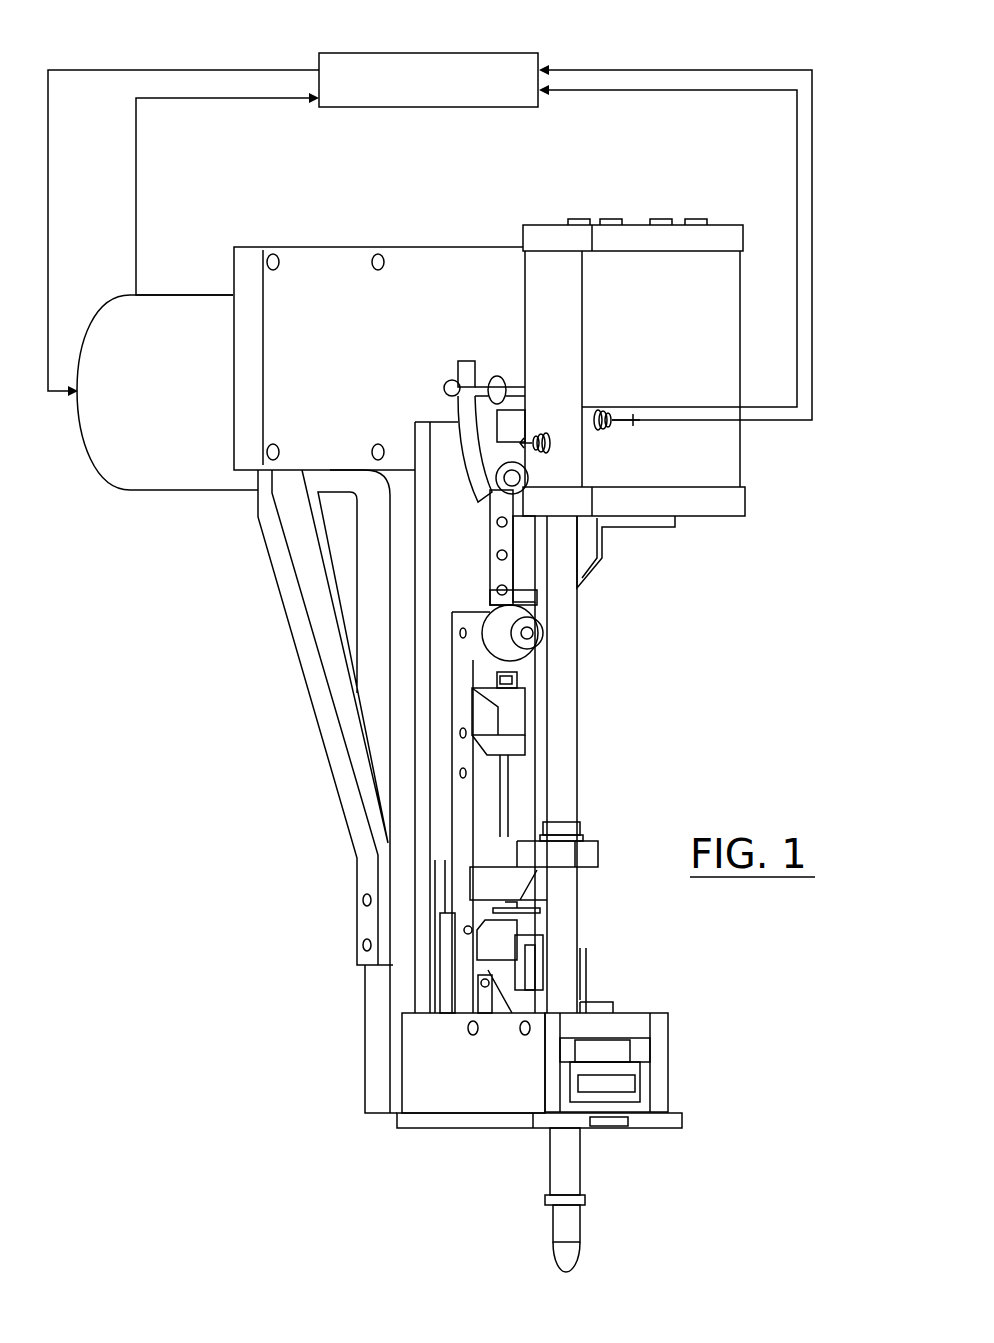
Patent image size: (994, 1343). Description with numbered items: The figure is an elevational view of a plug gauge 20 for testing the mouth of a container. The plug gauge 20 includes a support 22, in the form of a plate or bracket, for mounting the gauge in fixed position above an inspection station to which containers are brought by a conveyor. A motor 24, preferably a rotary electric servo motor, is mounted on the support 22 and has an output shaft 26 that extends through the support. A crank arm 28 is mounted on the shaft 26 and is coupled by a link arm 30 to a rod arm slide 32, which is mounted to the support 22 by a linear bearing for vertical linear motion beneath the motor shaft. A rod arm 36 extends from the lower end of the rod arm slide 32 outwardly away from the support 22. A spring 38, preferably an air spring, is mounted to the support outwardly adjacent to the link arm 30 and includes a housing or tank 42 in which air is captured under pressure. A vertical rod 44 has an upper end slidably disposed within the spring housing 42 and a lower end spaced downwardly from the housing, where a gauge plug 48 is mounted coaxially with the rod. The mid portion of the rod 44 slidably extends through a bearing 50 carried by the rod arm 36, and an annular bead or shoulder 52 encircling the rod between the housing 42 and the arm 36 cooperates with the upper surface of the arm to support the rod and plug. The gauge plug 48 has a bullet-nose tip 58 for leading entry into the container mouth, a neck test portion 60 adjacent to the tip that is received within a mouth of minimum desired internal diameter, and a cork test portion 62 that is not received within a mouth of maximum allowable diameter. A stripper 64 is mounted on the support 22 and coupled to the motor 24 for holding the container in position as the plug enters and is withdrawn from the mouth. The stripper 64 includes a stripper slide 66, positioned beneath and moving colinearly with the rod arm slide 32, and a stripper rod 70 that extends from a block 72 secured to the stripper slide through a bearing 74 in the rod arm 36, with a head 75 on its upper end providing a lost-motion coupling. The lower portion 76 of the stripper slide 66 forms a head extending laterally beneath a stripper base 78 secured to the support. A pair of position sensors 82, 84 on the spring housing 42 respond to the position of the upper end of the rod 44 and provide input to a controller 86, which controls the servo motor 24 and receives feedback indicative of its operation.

The plug gauge 20 is at (200, 770).
The support 22 is at (335, 246).
The motor 24 is at (143, 485).
The output shaft 26 is at (450, 385).
The crank arm 28 is at (462, 413).
The link arm 30 is at (520, 565).
The rod arm slide 32 is at (452, 808).
The rod arm 36 is at (600, 853).
The spring 38 is at (727, 217).
The spring housing 42 is at (740, 455).
The vertical rod 44 is at (578, 645).
The gauge plug 48 is at (572, 1170).
The bearing 50 is at (583, 836).
The annular bead 52 is at (567, 820).
The bullet-nose tip 58 is at (578, 1255).
The neck test portion 60 is at (558, 1225).
The cork test portion 62 is at (585, 1200).
The stripper 64 is at (715, 969).
The stripper slide 66 is at (447, 982).
The stripper rod 70 is at (510, 762).
The block 72 is at (482, 942).
The bearing 74 is at (485, 700).
The head 75 is at (495, 680).
The lower portion of stripper slide 76 is at (635, 1065).
The stripper base 78 is at (413, 1073).
The position sensor 82 is at (605, 412).
The position sensor 84 is at (550, 450).
The controller 86 is at (495, 52).